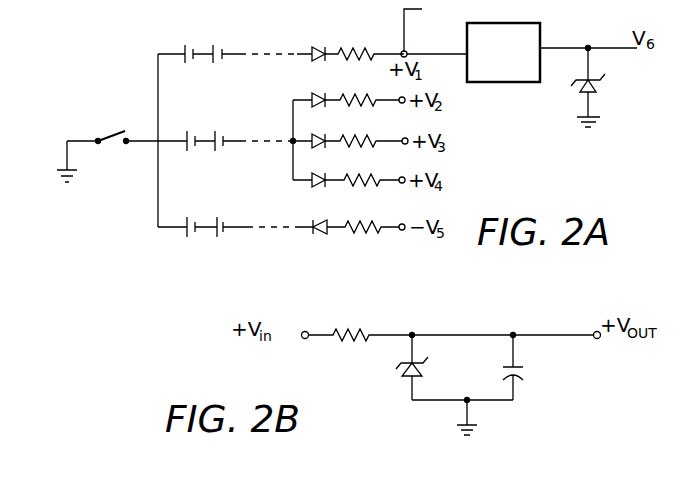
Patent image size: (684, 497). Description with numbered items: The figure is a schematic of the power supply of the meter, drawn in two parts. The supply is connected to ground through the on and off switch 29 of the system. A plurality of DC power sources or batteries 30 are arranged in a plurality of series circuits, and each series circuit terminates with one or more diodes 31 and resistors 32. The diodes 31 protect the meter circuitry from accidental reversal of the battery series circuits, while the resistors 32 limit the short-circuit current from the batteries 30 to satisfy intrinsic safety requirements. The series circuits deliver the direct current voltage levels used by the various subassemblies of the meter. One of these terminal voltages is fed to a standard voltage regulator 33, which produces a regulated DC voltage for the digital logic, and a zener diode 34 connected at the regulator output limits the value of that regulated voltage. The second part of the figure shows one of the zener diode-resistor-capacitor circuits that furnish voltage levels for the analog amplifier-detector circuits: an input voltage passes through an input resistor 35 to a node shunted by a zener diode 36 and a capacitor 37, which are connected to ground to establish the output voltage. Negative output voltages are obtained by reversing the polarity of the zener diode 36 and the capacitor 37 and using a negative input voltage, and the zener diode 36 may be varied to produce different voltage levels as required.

In FIG. 2A, the on and off switch 29 is at (121, 110).
In FIG. 2A, the batteries 30 is at (193, 50).
In FIG. 2A, the diodes 31 is at (322, 47).
In FIG. 2A, the resistors 32 is at (358, 47).
In FIG. 2A, the voltage regulator 33 is at (522, 82).
In FIG. 2A, the zener diode 34 is at (598, 88).
In FIG. 2B, the input resistor 35 is at (352, 340).
In FIG. 2B, the zener diode 36 is at (406, 377).
In FIG. 2B, the capacitor 37 is at (520, 379).